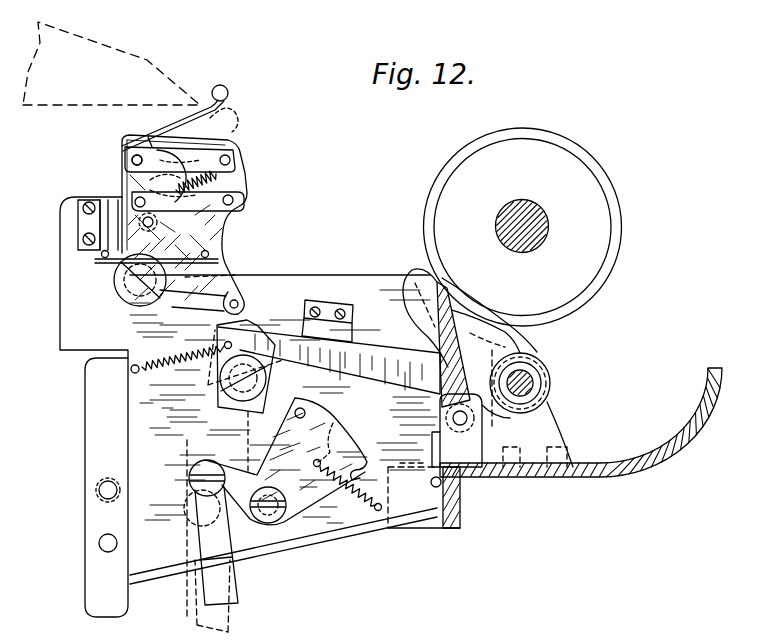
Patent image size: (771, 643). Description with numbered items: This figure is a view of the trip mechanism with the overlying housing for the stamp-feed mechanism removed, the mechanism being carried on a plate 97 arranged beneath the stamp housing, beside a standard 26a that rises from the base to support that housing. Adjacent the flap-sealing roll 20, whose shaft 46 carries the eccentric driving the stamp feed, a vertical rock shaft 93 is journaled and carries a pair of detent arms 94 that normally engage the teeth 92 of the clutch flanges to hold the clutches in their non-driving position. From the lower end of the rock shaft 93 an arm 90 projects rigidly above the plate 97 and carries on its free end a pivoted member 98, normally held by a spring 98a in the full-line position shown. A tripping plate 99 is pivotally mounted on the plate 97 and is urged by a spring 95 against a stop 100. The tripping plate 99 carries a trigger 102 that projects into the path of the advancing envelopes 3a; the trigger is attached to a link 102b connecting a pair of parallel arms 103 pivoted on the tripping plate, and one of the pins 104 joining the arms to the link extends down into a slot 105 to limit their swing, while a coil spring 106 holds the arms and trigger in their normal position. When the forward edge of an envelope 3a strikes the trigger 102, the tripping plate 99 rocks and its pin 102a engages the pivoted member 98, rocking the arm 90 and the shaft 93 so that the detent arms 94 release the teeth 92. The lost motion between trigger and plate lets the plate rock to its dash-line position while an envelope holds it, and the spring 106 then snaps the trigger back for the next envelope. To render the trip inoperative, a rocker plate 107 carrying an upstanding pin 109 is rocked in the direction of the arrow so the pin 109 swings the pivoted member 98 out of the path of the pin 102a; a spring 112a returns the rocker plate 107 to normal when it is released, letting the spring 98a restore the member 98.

The envelopes 3a is at (143, 62).
The pin 104 is at (144, 172).
The trigger 102 is at (228, 116).
The link 102b is at (130, 167).
The stop 100 is at (116, 213).
The parallel arms 103 is at (233, 181).
The coil spring 106 is at (175, 175).
The slot 105 is at (244, 219).
The tripping plate 99 is at (218, 233).
The spring 95 is at (220, 263).
The pin 102a is at (238, 300).
The plate 97 is at (323, 284).
The arm 90 is at (390, 352).
The pivoted member 98 is at (250, 324).
The spring 98a is at (175, 368).
The standard 26a is at (90, 455).
The rocker plate 107 is at (345, 417).
The upstanding pin 109 is at (305, 408).
The spring 112a is at (354, 498).
The flap-sealing roll 20 is at (587, 152).
The shaft 46 is at (546, 212).
The radial tooth 92 is at (437, 272).
The vertical rock shaft 93 is at (535, 382).
The detent arms 94 is at (438, 286).